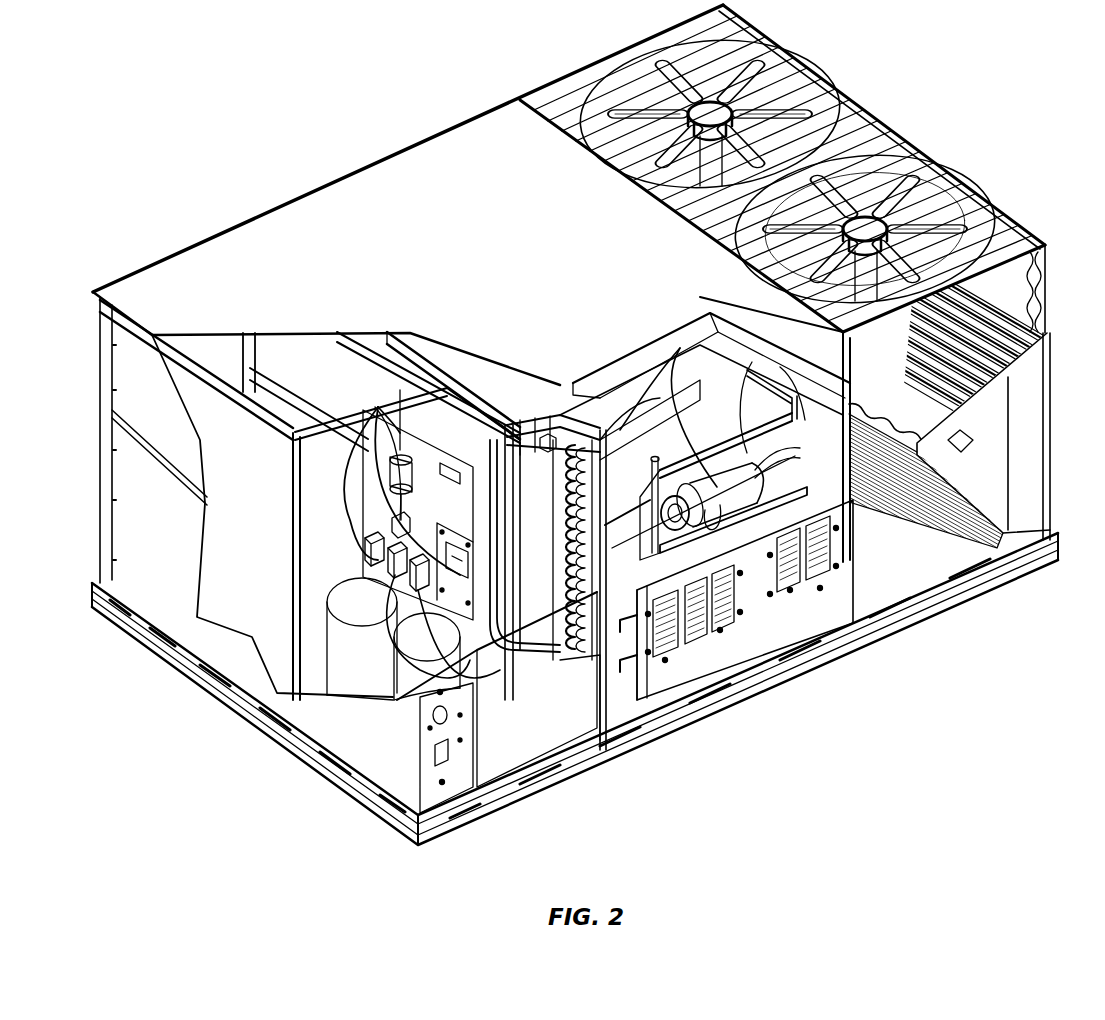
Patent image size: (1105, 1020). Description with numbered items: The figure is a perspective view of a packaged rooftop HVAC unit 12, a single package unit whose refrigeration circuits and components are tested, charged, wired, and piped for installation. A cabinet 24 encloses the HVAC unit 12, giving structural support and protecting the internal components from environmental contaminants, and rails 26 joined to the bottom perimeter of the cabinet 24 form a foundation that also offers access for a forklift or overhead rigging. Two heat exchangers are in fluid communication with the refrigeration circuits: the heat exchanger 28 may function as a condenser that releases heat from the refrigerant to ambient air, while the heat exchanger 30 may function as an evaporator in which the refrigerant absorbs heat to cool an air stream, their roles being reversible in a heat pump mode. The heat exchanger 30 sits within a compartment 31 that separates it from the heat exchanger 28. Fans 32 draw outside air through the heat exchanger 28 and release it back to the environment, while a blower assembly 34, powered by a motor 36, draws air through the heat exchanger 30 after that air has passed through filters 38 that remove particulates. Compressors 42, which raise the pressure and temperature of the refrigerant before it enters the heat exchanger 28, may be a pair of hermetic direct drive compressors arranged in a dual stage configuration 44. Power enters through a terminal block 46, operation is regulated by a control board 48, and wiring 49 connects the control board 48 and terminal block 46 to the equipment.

The HVAC unit 12 is at (303, 152).
The cabinet 24 is at (140, 540).
The rails 26 is at (168, 640).
The heat exchanger 28 is at (1046, 287).
The heat exchanger 30 is at (578, 648).
The compartment 31 is at (618, 455).
The fans 32 is at (871, 215).
The blower assembly 34 is at (718, 468).
The motor 36 is at (705, 405).
The filters 38 is at (535, 468).
The compressors 42 is at (335, 655).
The dual stage configuration 44 is at (330, 592).
The terminal block 46 is at (385, 520).
The control board 48 is at (456, 468).
The wiring 49 is at (548, 430).